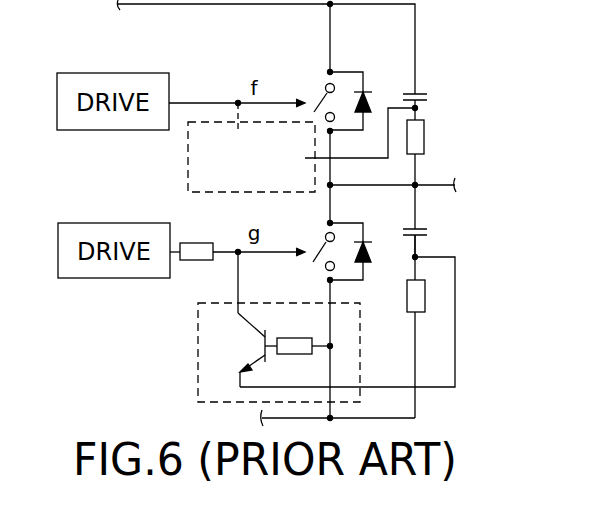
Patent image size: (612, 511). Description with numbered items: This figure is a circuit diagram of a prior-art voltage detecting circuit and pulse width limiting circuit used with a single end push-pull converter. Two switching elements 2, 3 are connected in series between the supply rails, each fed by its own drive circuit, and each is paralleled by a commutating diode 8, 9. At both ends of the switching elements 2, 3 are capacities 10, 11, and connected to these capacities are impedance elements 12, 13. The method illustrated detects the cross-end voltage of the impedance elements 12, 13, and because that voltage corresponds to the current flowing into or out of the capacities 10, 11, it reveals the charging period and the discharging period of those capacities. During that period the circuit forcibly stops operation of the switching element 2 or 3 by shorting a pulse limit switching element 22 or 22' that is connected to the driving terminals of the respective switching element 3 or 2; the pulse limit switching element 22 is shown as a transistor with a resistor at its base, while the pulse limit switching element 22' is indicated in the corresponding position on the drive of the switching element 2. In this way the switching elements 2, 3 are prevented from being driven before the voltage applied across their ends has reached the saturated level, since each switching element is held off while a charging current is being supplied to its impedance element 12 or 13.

The switching element 2 is at (323, 98).
The switching element 3 is at (317, 258).
The commutating diode 8 is at (372, 100).
The commutating diode 9 is at (370, 262).
The capacity 10 is at (420, 93).
The capacity 11 is at (428, 228).
The impedance element 12 is at (426, 143).
The impedance element 13 is at (405, 300).
The pulse limit switching element 22 is at (279, 352).
The pulse limit switching element 22' is at (251, 157).